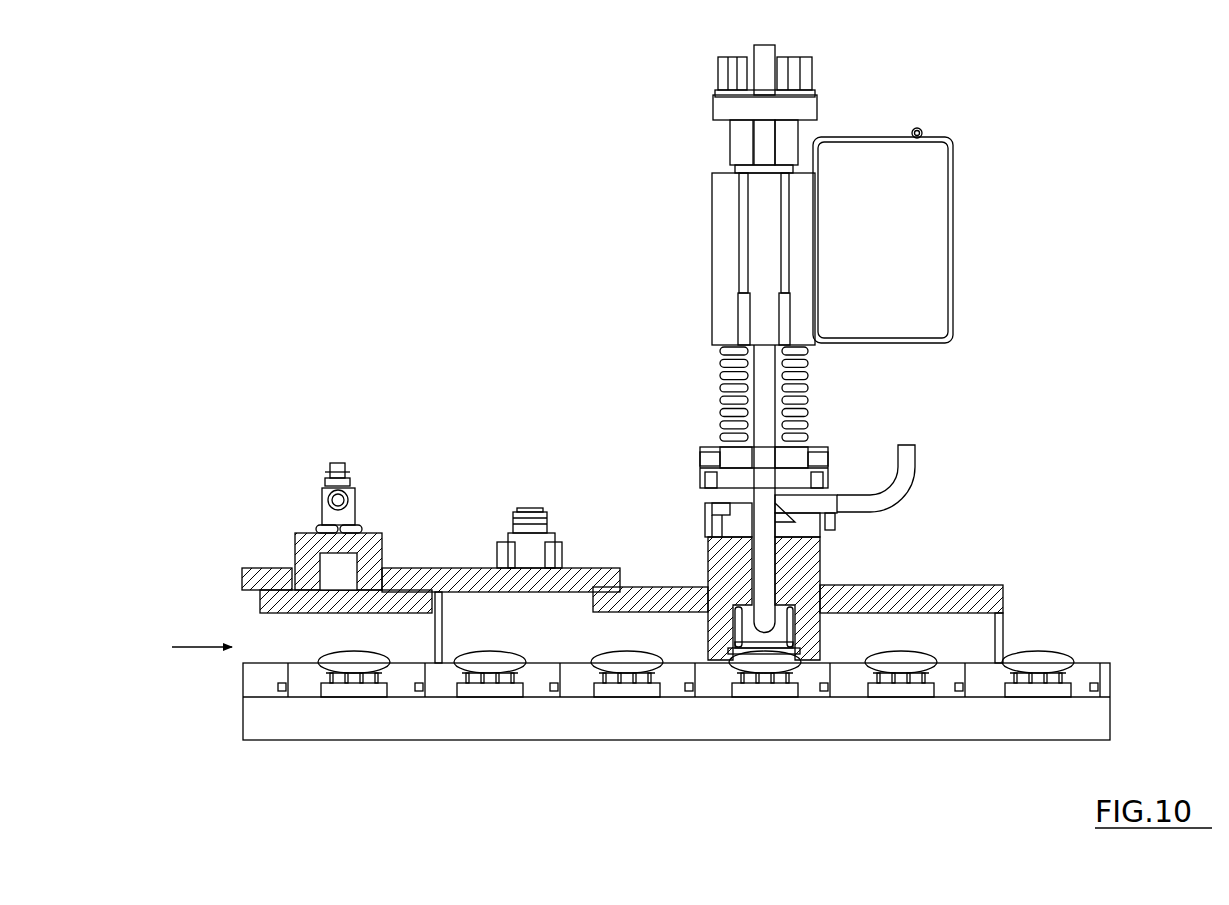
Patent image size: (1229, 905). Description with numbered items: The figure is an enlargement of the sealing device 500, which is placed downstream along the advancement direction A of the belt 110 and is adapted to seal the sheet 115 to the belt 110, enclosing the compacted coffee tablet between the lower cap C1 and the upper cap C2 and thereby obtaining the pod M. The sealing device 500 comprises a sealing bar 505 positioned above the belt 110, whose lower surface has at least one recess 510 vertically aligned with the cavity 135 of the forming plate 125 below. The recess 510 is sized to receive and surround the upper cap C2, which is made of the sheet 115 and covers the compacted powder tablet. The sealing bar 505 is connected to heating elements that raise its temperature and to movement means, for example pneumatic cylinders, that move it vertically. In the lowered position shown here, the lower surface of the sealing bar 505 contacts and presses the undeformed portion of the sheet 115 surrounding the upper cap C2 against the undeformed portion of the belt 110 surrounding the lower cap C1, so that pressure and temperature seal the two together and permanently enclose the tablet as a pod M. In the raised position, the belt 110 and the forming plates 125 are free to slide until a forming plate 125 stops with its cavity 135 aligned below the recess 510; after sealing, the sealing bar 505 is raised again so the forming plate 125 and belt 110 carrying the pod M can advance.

The sealing device 500 is at (920, 102).
The sealing bar 505 is at (822, 568).
The recess 510 is at (805, 650).
The sheet 115 is at (697, 660).
The belt 110 is at (684, 668).
The forming plate 125 is at (728, 680).
The cavity 135 is at (795, 675).
The lower cap C1 is at (767, 678).
The upper cap C2 is at (722, 615).
The pod M is at (1050, 655).
The advancement direction A is at (202, 631).